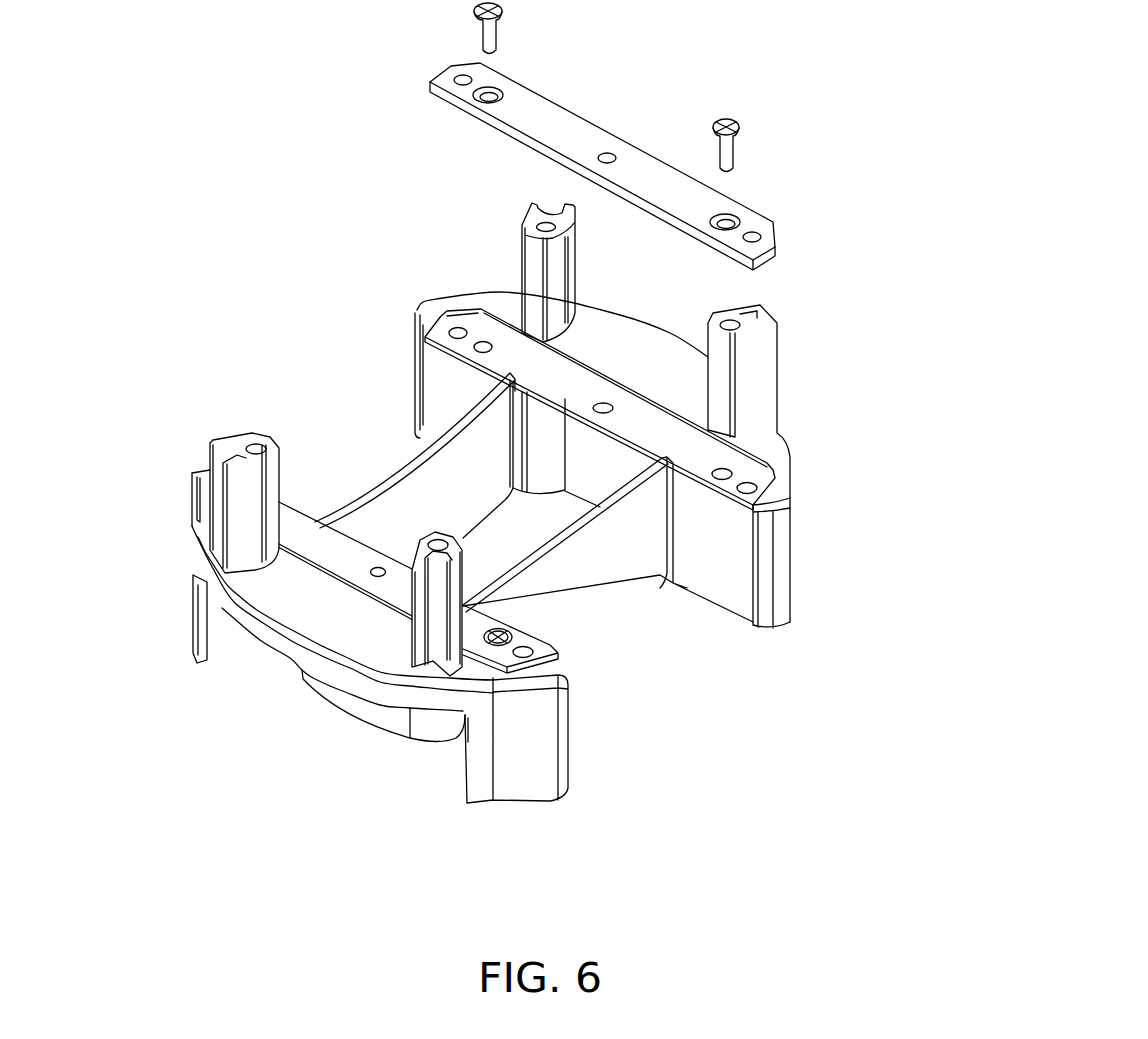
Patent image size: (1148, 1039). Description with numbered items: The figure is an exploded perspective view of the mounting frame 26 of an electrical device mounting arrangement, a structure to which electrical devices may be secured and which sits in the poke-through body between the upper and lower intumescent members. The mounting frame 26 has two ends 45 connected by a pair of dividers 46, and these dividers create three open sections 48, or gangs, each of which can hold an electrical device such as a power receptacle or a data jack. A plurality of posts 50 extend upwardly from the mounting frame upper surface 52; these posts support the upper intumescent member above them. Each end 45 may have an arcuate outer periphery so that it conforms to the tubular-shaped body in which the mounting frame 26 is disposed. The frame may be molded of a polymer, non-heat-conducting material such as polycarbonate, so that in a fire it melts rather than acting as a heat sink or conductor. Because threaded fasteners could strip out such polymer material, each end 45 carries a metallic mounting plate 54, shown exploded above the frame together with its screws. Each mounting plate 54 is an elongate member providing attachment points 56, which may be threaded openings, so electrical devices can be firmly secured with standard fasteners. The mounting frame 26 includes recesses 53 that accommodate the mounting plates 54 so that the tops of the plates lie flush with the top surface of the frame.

The mounting frame 26 is at (769, 716).
The end 45 is at (424, 304).
The divider 46 is at (578, 617).
The open section 48 is at (455, 462).
The post 50 is at (522, 243).
The mounting frame upper surface 52 is at (258, 582).
The recess 53 is at (752, 473).
The metallic mounting plate 54 is at (768, 231).
The attachment point 56 is at (378, 566).